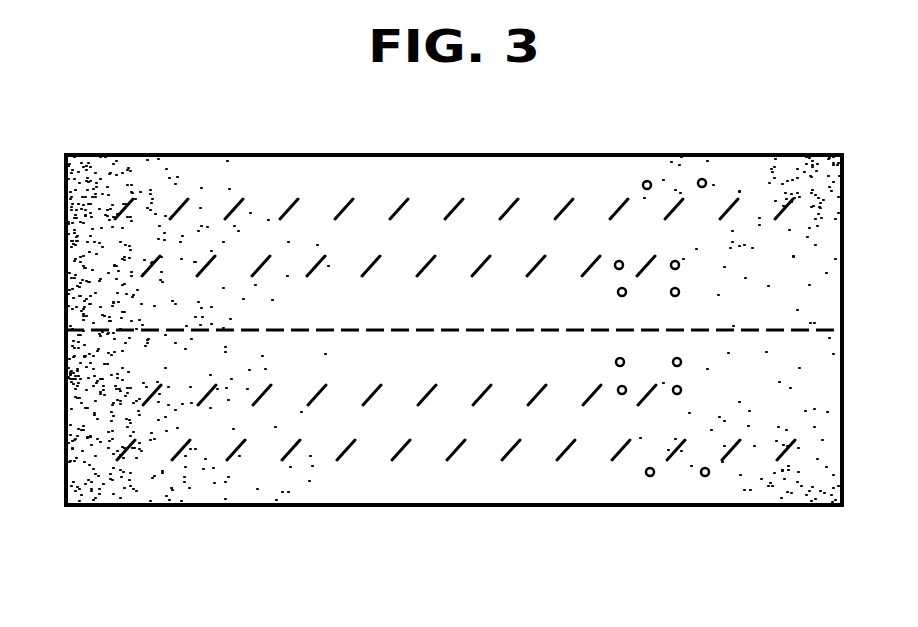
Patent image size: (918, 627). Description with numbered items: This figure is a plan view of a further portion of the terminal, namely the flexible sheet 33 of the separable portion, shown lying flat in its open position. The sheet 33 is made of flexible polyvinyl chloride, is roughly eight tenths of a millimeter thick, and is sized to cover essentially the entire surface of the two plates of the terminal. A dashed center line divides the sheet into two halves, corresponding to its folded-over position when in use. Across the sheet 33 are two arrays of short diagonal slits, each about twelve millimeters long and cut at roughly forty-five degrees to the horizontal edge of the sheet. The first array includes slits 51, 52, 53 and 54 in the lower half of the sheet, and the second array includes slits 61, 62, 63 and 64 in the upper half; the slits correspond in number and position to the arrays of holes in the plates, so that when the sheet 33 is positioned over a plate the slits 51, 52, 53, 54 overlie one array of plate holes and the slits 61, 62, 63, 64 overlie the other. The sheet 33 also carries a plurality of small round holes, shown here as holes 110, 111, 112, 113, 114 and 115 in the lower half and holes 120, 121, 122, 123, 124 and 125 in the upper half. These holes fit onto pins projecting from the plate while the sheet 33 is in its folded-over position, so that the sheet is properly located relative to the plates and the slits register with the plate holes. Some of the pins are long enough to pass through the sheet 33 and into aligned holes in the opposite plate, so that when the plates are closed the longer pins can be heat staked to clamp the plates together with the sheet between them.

The flexible sheet 33 is at (196, 178).
The slit 51 is at (673, 457).
The slit 52 is at (618, 457).
The slit 53 is at (563, 457).
The slit 54 is at (596, 386).
The slit 61 is at (683, 198).
The slit 62 is at (626, 200).
The slit 63 is at (571, 200).
The slit 64 is at (594, 264).
The hole 110 is at (681, 362).
The hole 111 is at (705, 476).
The hole 112 is at (650, 476).
The hole 113 is at (681, 390).
The hole 114 is at (622, 394).
The hole 115 is at (616, 362).
The hole 120 is at (679, 292).
The hole 121 is at (702, 179).
The hole 122 is at (647, 181).
The hole 123 is at (679, 265).
The hole 124 is at (616, 261).
The hole 125 is at (618, 295).